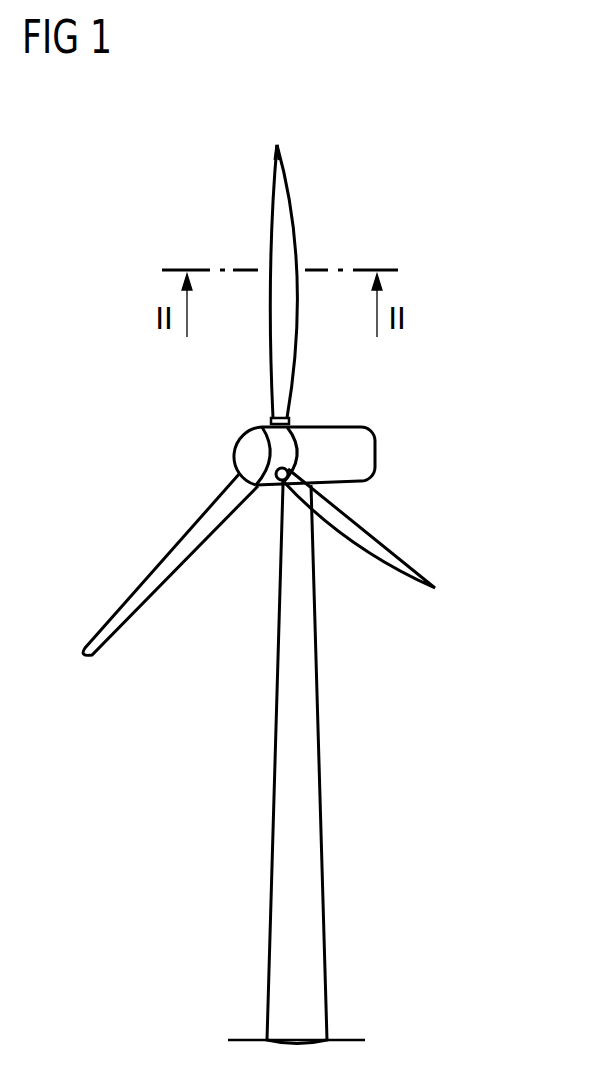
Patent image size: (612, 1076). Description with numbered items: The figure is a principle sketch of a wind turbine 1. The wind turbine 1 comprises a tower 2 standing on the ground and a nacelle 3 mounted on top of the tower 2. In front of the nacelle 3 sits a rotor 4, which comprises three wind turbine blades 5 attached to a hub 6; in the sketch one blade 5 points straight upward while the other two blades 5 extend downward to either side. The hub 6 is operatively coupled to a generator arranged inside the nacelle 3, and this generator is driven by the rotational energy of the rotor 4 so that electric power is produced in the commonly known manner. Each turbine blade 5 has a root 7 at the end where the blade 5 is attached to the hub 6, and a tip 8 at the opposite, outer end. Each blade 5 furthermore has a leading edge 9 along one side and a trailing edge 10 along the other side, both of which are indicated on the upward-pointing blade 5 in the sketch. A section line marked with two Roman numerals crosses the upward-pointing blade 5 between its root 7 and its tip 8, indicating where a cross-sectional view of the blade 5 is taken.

The wind turbine 1 is at (453, 349).
The tower 2 is at (312, 840).
The nacelle 3 is at (370, 458).
The rotor 4 is at (231, 433).
The wind turbine blade 5 is at (293, 240).
The hub 6 is at (241, 452).
The root 7 is at (283, 405).
The tip 8 is at (277, 143).
The leading edge 9 is at (271, 178).
The trailing edge 10 is at (286, 170).